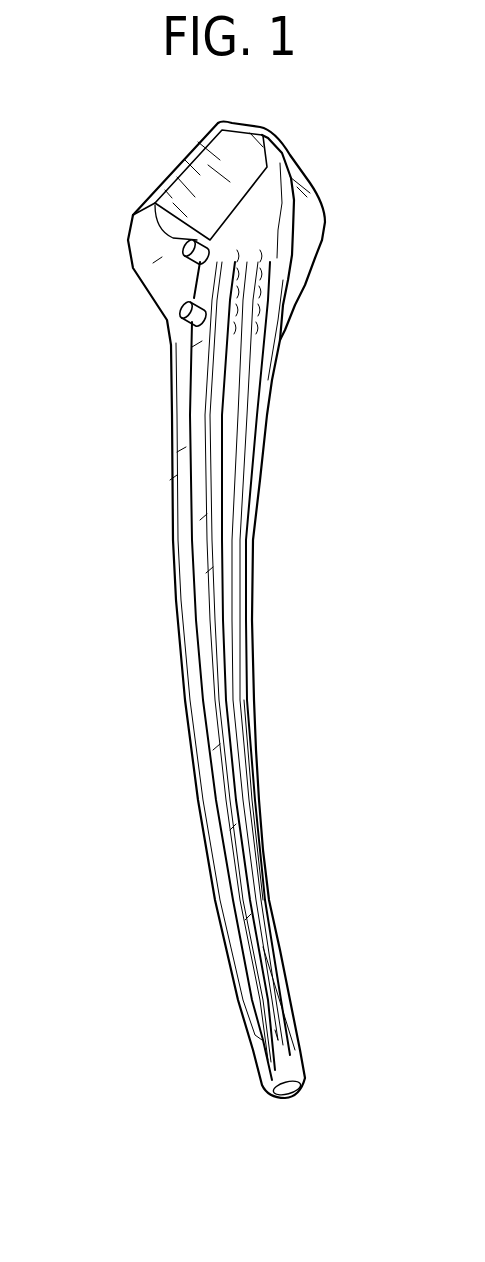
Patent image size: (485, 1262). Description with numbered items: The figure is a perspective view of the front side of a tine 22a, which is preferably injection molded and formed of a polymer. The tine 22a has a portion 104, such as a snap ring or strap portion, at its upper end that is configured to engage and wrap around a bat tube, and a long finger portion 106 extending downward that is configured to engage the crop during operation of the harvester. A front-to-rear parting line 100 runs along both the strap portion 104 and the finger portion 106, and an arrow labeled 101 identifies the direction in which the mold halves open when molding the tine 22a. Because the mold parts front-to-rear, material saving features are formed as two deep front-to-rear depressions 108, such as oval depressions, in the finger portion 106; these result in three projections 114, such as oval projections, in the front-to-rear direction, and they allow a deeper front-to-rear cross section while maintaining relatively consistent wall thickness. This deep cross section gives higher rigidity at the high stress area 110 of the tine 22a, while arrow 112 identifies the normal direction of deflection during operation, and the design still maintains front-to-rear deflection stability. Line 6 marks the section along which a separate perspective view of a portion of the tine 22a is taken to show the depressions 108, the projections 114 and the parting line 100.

The front-to-rear parting line 100 is at (190, 500).
The mold opening direction 101 is at (307, 488).
The snap ring or strap portion 104 is at (273, 258).
The finger portion 106 is at (257, 762).
The front-to-rear depressions 108 is at (232, 335).
The high stress area 110 is at (150, 325).
The normal direction of deflection 112 is at (312, 870).
The projections 114 is at (220, 520).
The tine 22a is at (300, 337).
The line 6- 6 is at (153, 550).